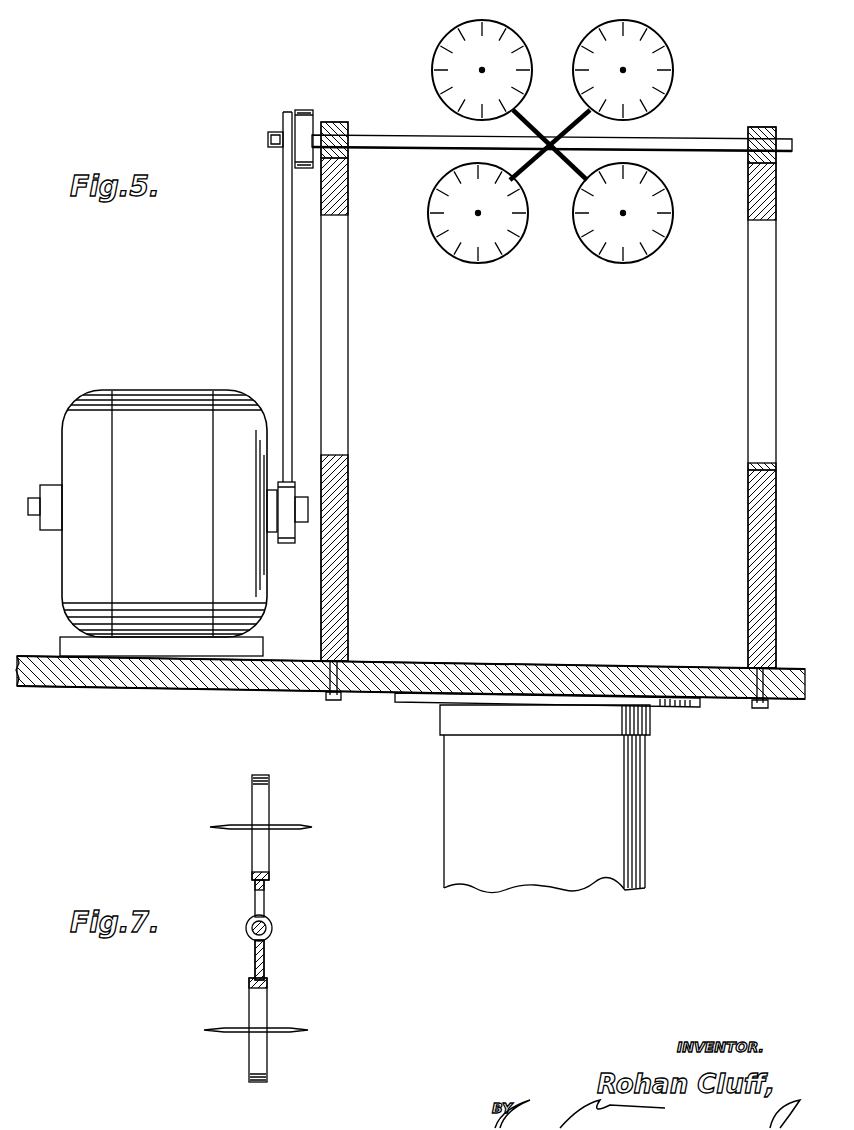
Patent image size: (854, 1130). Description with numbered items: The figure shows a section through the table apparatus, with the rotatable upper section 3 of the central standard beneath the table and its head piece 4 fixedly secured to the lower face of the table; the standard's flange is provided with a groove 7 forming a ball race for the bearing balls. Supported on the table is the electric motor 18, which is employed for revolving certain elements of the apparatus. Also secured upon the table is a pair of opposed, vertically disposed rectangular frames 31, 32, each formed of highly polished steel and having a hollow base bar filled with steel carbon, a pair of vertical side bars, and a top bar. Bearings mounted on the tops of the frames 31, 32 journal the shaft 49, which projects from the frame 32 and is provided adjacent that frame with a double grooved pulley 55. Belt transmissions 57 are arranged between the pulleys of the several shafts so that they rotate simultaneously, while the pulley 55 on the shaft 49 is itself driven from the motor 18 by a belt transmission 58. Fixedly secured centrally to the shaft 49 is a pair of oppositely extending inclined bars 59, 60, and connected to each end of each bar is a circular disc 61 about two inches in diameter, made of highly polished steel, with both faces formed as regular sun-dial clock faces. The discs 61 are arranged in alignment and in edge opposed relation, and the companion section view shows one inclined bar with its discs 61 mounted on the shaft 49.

In FIG. 5, the rotatable upper portion or section 3 is at (618, 807).
In FIG. 5, the head piece 4 is at (417, 700).
In FIG. 5, the groove 7 is at (449, 30).
In FIG. 5, the electric motor 18 is at (173, 410).
In FIG. 5, the frame 31 is at (757, 313).
In FIG. 5, the frame 32 is at (350, 308).
In FIG. 5, the shaft 49 is at (383, 137).
In FIG. 7, the shaft 49 is at (268, 928).
In FIG. 5, the double grooved pulley 55 is at (315, 110).
In FIG. 5, the belt transmission 57 is at (302, 110).
In FIG. 5, the belt transmission 58 is at (290, 213).
In FIG. 5, the inclined bar 59 is at (567, 115).
In FIG. 7, the inclined bar 59 is at (262, 905).
In FIG. 5, the inclined bar 60 is at (567, 161).
In FIG. 7, the inclined bar 60 is at (255, 952).
In FIG. 5, the circular disc 61 is at (497, 263).
In FIG. 7, the circular disc 61 is at (270, 789).